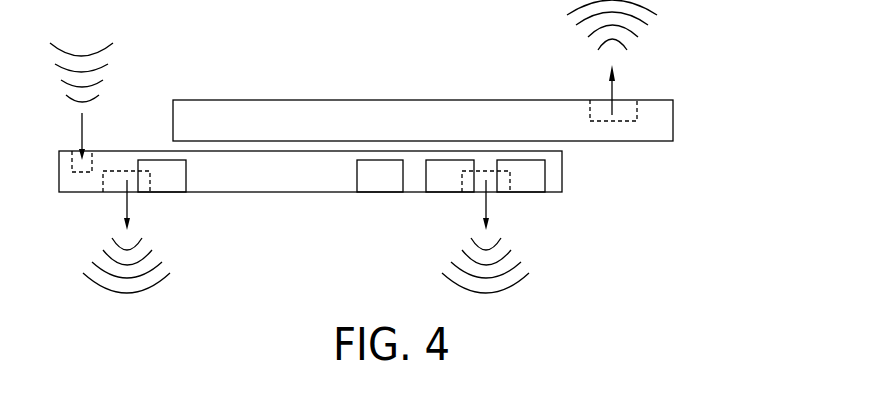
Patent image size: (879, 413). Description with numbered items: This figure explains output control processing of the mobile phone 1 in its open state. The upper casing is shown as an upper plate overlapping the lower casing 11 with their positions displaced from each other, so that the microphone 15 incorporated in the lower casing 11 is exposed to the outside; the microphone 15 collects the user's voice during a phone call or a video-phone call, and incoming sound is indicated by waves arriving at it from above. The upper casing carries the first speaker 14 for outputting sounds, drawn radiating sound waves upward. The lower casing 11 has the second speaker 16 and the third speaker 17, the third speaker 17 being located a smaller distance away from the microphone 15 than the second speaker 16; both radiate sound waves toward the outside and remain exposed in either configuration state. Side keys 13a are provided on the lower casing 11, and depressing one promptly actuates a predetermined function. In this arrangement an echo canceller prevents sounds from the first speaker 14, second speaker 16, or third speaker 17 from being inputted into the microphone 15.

The mobile phone 1 is at (399, 70).
The lower casing 11 is at (562, 172).
The side keys 13a is at (168, 192).
The first speaker 14 is at (637, 111).
The microphone 15 is at (64, 193).
The second speaker 16 is at (503, 192).
The third speaker 17 is at (107, 192).